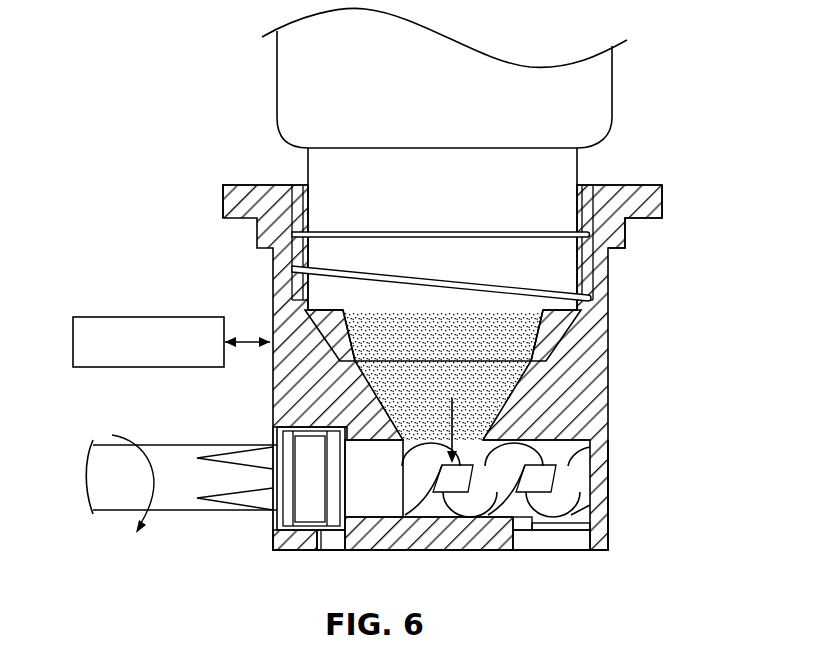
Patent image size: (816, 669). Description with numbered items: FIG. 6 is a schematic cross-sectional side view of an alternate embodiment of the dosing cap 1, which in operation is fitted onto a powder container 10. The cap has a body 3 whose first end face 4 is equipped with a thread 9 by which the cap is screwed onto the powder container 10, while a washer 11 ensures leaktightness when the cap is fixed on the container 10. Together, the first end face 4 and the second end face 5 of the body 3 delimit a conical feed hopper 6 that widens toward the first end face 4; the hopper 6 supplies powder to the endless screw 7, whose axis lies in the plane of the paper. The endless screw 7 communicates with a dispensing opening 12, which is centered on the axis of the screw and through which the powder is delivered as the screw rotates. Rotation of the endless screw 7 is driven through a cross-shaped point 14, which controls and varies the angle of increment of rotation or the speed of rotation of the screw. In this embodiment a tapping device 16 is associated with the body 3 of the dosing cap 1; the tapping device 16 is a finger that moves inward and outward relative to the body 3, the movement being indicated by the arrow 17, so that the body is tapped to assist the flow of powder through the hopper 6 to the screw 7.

The dosing cap 1 is at (620, 528).
The body 3 is at (609, 392).
The first end face 4 is at (627, 184).
The second end face 5 is at (443, 552).
The conical feed hopper 6 is at (503, 407).
The endless screw 7 is at (578, 468).
The thread 9 is at (326, 268).
The powder container 10 is at (612, 93).
The washer 11 is at (563, 333).
The dispensing opening 12 is at (547, 543).
The cross-shaped point 14 is at (122, 502).
The tapping device 16 is at (148, 317).
The arrow 17 is at (246, 339).